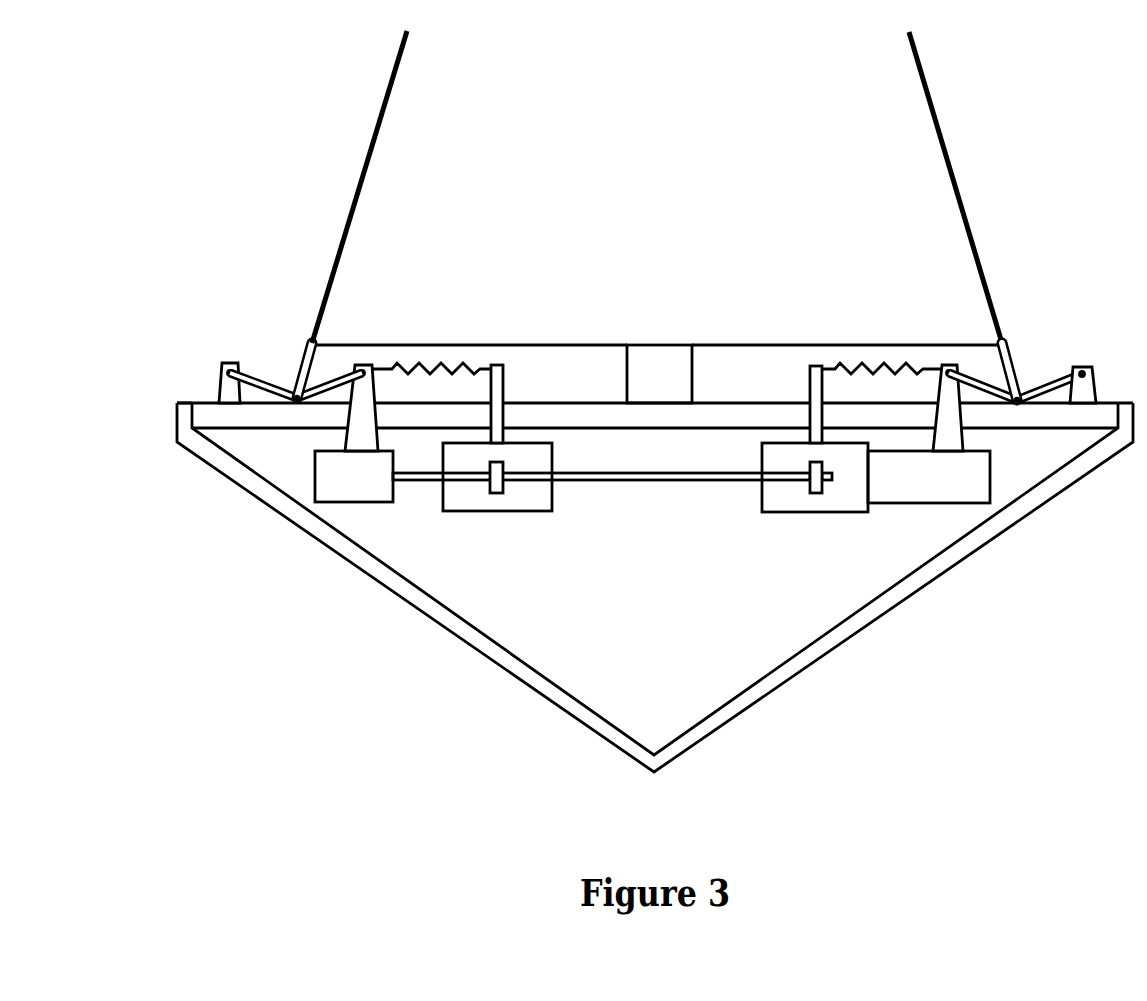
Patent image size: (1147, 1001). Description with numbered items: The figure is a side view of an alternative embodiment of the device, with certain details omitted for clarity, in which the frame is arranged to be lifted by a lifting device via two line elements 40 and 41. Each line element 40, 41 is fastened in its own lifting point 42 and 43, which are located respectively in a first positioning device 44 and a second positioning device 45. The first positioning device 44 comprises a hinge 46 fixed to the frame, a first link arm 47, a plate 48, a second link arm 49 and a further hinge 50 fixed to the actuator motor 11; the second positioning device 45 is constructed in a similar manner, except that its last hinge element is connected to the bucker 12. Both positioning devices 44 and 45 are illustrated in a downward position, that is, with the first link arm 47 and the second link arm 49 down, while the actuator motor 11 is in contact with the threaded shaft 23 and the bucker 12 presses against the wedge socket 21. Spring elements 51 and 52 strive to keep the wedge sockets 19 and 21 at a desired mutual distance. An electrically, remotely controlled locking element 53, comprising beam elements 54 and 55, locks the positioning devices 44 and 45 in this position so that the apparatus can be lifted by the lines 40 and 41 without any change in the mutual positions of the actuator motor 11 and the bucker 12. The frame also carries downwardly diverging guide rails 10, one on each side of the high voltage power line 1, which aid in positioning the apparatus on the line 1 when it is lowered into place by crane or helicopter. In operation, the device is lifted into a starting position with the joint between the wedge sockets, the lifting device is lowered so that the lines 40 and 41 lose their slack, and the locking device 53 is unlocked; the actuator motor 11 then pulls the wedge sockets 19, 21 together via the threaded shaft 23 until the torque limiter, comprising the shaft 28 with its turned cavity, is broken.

The high voltage power line 1 is at (185, 400).
The guide rails 10 is at (463, 652).
The actuator motor 11 is at (352, 502).
The bucker 12 is at (947, 503).
The wedge socket 19 is at (552, 493).
The wedge socket 21 is at (842, 512).
The threaded shaft 23 is at (675, 481).
The shaft 28 is at (415, 482).
The line element 40 is at (375, 120).
The line element 41 is at (935, 110).
The lifting point 42 is at (313, 343).
The lifting point 43 is at (1012, 348).
The first positioning device 44 is at (352, 326).
The second positioning device 45 is at (976, 331).
The hinge 46 is at (232, 362).
The first link arm 47 is at (268, 385).
The plate 48 is at (292, 393).
The second link arm 49 is at (332, 392).
The hinge 50 is at (365, 362).
The spring element 51 is at (445, 362).
The spring element 52 is at (857, 362).
The locking element 53 is at (658, 345).
The beam element 54 is at (580, 345).
The beam element 55 is at (741, 345).